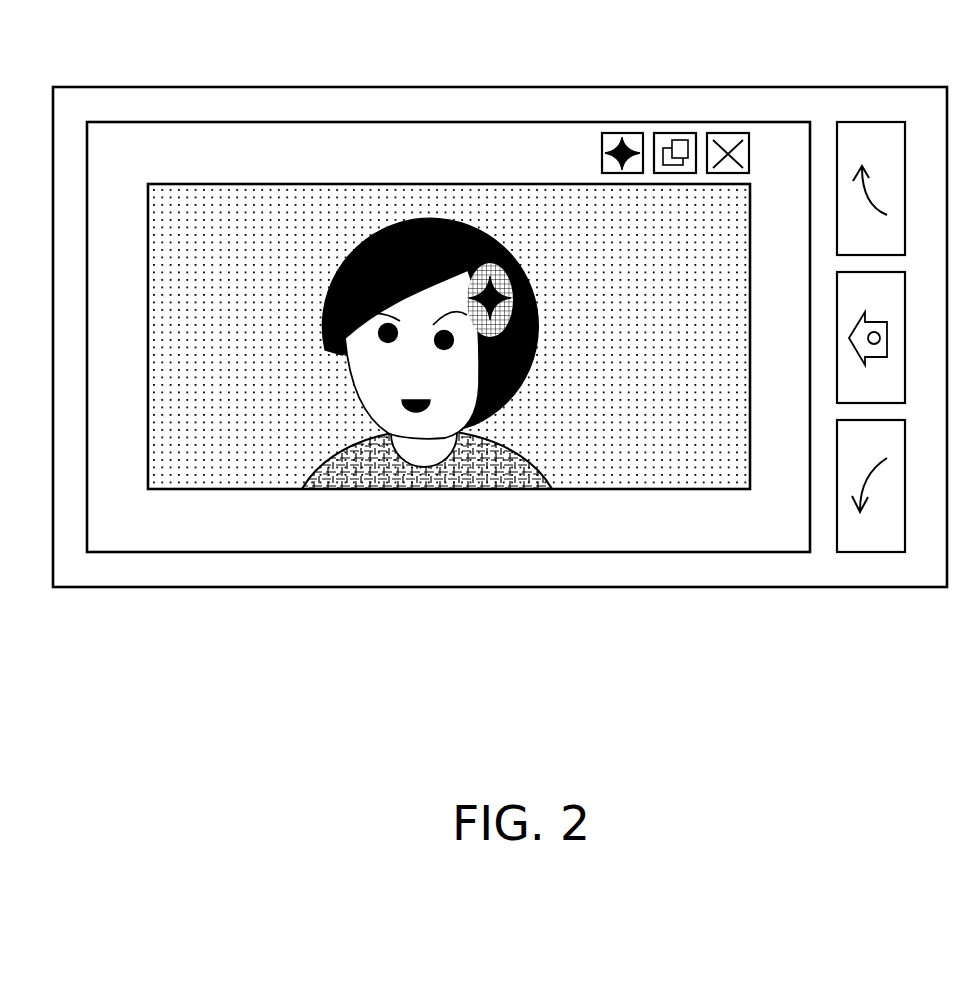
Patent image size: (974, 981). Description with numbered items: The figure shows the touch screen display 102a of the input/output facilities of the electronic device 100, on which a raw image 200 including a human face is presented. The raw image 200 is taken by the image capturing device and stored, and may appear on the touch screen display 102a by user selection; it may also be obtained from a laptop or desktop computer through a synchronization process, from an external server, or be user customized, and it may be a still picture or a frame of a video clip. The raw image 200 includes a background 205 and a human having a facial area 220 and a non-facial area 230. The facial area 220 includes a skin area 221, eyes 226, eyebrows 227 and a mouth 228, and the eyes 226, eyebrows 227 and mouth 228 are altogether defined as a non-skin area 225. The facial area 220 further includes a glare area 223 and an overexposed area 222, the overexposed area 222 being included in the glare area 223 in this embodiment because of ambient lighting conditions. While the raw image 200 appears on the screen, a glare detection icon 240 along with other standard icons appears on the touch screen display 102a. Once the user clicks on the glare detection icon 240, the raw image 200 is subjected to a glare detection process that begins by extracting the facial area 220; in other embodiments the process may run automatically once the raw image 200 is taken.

The electronic device 100 is at (948, 745).
The touch screen display 102a is at (772, 122).
The raw image 200 is at (428, 183).
The background 205 is at (335, 208).
The facial area 220 is at (430, 382).
The skin area 221 is at (405, 427).
The overexposed area 222 is at (492, 265).
The glare area 223 is at (496, 242).
The non-skin area 225 is at (346, 487).
The eyes 226 is at (405, 412).
The eyebrows 227 is at (382, 342).
The mouth 228 is at (388, 433).
The non-facial area 230 is at (430, 360).
The glare detection icon 240 is at (613, 133).